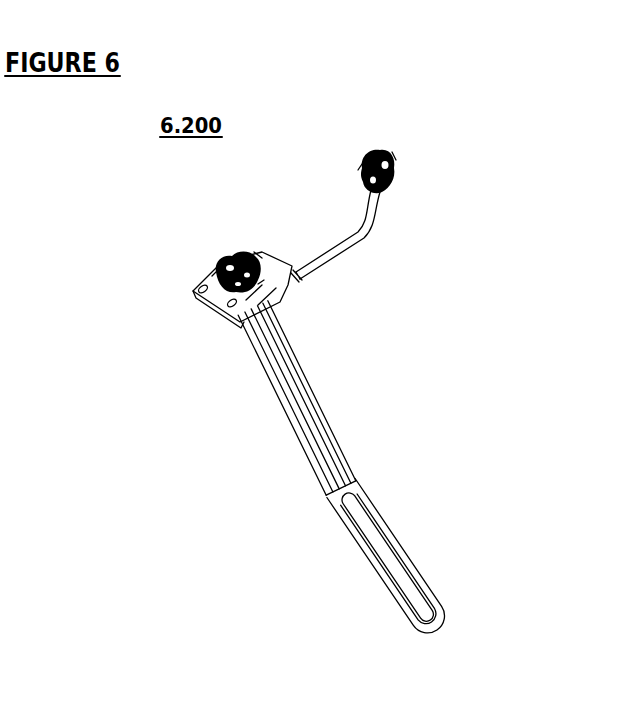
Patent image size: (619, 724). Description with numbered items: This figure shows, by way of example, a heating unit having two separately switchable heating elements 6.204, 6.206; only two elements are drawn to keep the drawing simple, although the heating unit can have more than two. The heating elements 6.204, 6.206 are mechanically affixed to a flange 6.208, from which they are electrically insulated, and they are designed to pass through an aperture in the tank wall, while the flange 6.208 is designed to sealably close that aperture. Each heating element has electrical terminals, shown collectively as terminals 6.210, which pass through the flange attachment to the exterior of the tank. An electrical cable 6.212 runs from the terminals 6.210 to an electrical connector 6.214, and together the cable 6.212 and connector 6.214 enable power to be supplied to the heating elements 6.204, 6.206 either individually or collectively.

The heating element 6.204 is at (343, 487).
The heating element 6.206 is at (420, 587).
The flange 6.208 is at (207, 310).
The electrical terminals 6.210 is at (230, 250).
The electrical cable 6.212 is at (360, 242).
The electrical connector 6.214 is at (396, 161).